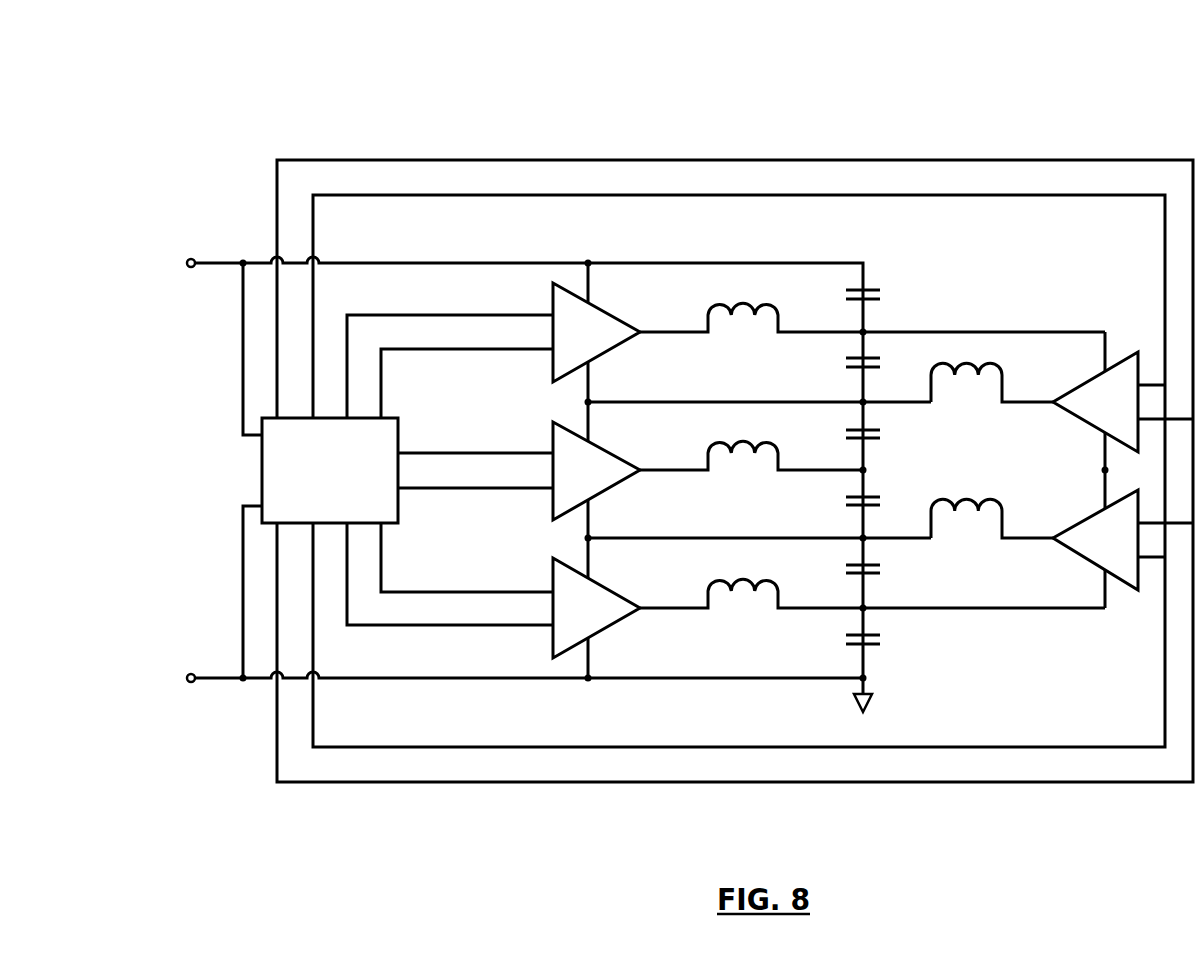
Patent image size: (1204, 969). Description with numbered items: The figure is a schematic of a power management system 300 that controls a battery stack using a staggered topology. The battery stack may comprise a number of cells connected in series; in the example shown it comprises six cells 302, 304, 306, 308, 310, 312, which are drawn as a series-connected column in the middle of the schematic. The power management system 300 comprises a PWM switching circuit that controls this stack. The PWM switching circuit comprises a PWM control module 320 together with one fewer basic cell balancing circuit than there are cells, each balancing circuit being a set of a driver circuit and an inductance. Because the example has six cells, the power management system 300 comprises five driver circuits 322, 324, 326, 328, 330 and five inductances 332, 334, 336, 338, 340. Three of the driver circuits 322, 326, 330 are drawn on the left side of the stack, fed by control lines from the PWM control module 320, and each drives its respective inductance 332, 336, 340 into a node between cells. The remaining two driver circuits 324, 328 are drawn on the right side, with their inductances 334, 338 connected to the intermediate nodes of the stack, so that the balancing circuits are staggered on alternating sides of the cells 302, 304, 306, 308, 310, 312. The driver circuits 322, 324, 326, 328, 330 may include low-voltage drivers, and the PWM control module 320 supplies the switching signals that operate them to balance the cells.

The power management system 300 is at (778, 92).
The cell 302 is at (874, 634).
The cell 304 is at (874, 564).
The cell 306 is at (874, 496).
The cell 308 is at (874, 429).
The cell 310 is at (876, 357).
The cell 312 is at (874, 289).
The PWM control module 320 is at (398, 433).
The driver circuit 322 is at (616, 590).
The driver circuit 324 is at (1138, 497).
The driver circuit 326 is at (616, 452).
The driver circuit 328 is at (1128, 353).
The driver circuit 330 is at (616, 313).
The inductance 332 is at (754, 580).
The inductance 334 is at (979, 513).
The inductance 336 is at (755, 442).
The inductance 338 is at (978, 376).
The inductance 340 is at (754, 304).